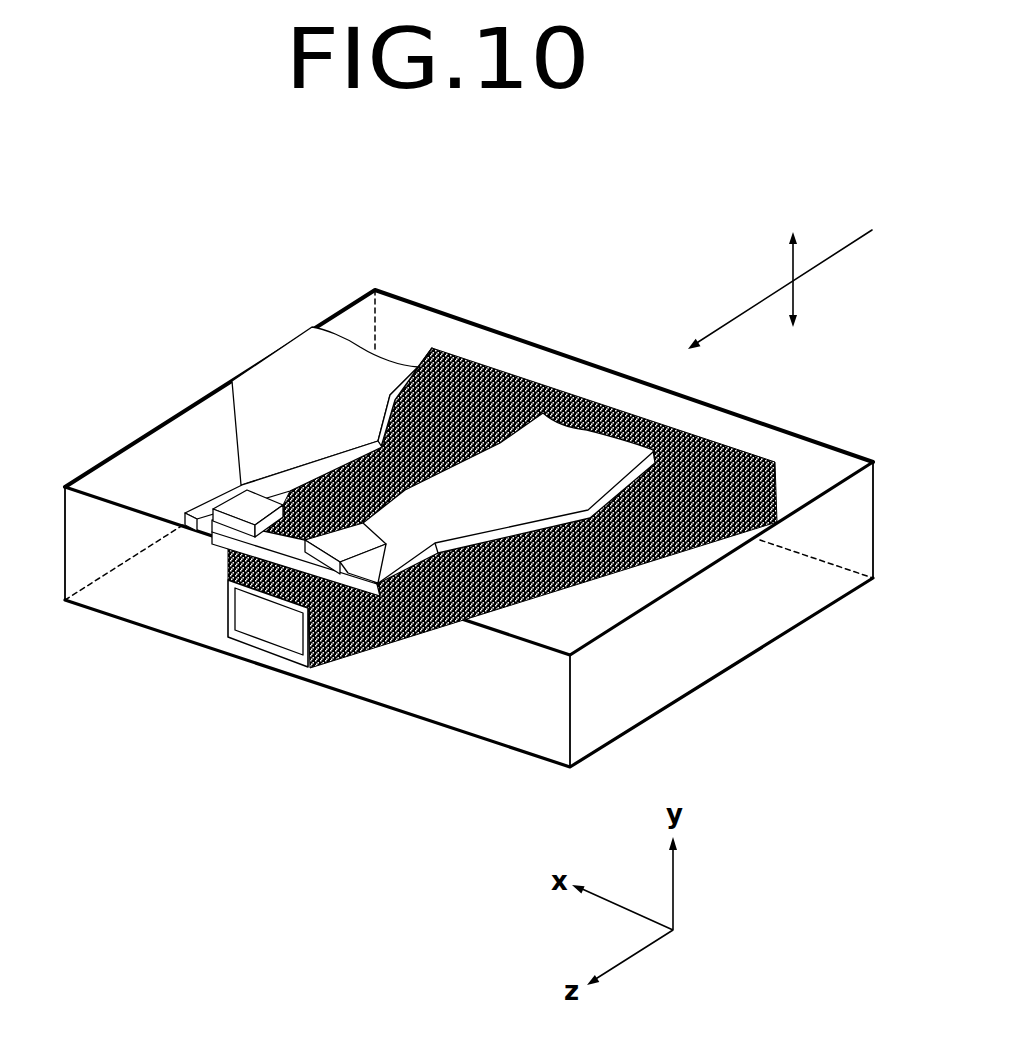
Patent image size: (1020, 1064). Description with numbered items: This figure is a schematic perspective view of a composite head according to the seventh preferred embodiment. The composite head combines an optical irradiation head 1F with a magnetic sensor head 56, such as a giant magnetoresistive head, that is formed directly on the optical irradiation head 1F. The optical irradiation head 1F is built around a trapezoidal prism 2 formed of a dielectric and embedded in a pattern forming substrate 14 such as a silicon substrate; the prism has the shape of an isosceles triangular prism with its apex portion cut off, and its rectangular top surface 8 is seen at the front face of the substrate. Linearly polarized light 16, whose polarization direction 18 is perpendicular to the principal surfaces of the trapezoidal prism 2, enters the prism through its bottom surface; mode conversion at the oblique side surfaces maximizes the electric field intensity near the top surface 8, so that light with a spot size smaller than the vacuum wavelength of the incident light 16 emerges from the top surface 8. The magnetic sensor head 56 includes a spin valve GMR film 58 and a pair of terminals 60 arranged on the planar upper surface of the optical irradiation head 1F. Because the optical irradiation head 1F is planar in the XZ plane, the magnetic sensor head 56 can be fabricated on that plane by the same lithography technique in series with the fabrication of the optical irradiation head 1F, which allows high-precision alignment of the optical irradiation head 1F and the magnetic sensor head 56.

The optical irradiation head 1F is at (469, 512).
The trapezoidal prism 2 is at (568, 372).
The rectangular top surface 8 is at (270, 637).
The pattern forming substrate 14 is at (715, 647).
The linearly polarized light 16 is at (752, 305).
The polarization direction 18 is at (793, 295).
The magnetic sensor head 56 is at (210, 487).
The spin valve GMR film 58 is at (293, 540).
The terminals 60 is at (257, 395).